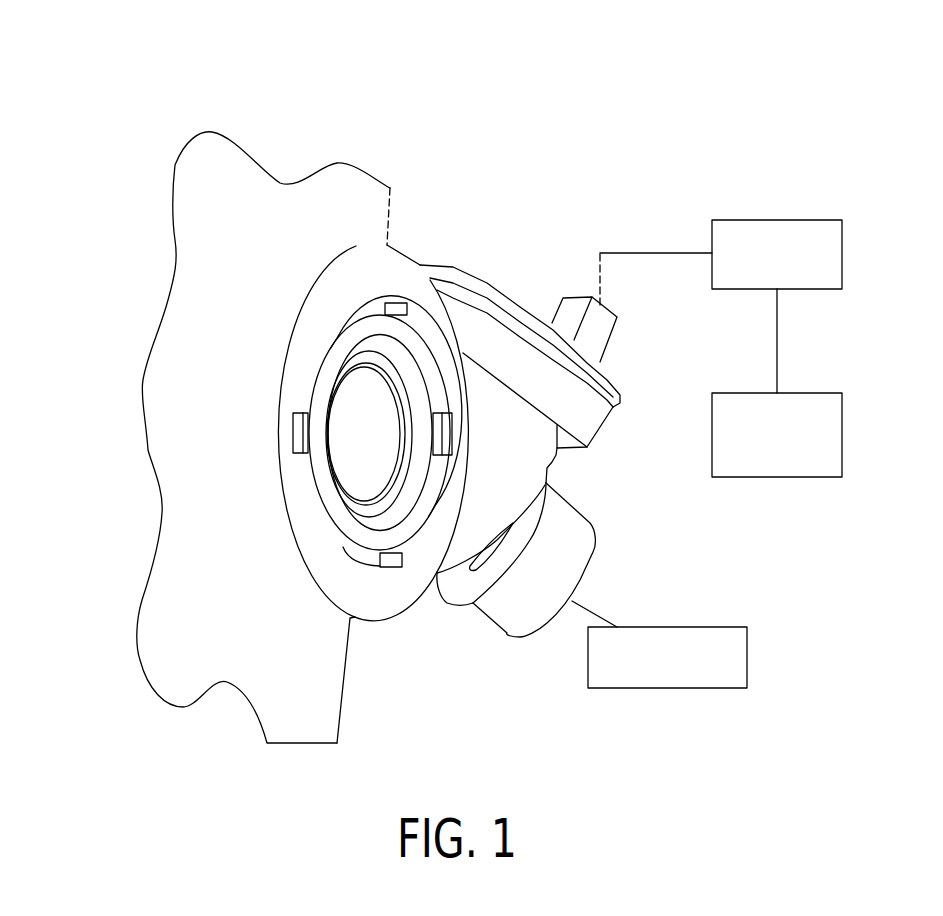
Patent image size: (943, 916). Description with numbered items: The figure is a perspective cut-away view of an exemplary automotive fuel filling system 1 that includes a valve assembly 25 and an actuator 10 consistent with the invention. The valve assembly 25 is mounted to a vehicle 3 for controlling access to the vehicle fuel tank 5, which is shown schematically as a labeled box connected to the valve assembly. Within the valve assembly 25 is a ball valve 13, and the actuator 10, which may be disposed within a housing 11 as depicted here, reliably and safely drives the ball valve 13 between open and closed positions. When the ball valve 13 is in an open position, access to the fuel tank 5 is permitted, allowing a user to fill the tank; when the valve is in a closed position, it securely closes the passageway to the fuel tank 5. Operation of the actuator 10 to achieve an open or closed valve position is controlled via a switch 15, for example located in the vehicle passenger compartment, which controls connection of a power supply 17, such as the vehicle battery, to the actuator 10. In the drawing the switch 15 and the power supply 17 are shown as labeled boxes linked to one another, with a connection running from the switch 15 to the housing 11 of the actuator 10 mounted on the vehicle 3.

The automotive fuel filling system 1 is at (135, 74).
The vehicle 3 is at (193, 265).
The vehicle fuel tank 5 is at (687, 627).
The actuator 10 is at (478, 208).
The housing 11 is at (500, 280).
The ball valve 13 is at (324, 436).
The switch 15 is at (753, 218).
The power supply 17 is at (752, 393).
The valve assembly 25 is at (498, 663).